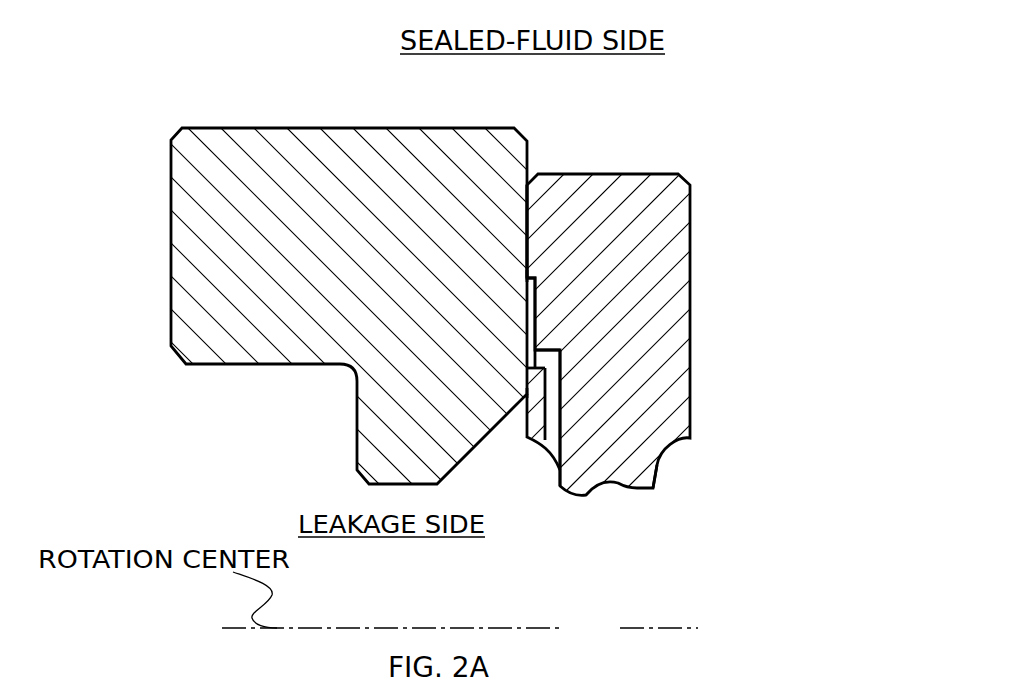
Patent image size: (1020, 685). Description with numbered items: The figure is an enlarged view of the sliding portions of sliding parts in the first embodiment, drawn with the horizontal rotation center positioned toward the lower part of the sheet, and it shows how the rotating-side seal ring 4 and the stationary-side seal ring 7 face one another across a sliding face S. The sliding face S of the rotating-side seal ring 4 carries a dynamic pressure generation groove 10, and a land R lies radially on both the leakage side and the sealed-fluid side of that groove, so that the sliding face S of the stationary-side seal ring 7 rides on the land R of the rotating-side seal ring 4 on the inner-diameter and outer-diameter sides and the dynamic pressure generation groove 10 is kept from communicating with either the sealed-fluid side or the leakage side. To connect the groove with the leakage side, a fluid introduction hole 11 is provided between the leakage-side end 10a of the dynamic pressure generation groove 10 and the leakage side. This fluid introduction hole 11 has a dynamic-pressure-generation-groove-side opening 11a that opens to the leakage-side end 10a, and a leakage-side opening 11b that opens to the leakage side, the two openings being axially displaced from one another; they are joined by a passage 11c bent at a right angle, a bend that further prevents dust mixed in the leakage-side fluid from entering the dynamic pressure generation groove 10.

The stationary-side seal ring 7 is at (275, 128).
The rotating-side seal ring 4 is at (647, 173).
The sliding face S is at (527, 393).
The land R is at (527, 275).
The dynamic pressure generation groove 10 is at (535, 302).
The leakage-side end 10a is at (531, 368).
The fluid introduction hole 11 is at (562, 403).
The dynamic-pressure-generation-groove-side opening 11a is at (560, 350).
The leakage-side opening 11b is at (548, 452).
The passage 11c is at (553, 420).